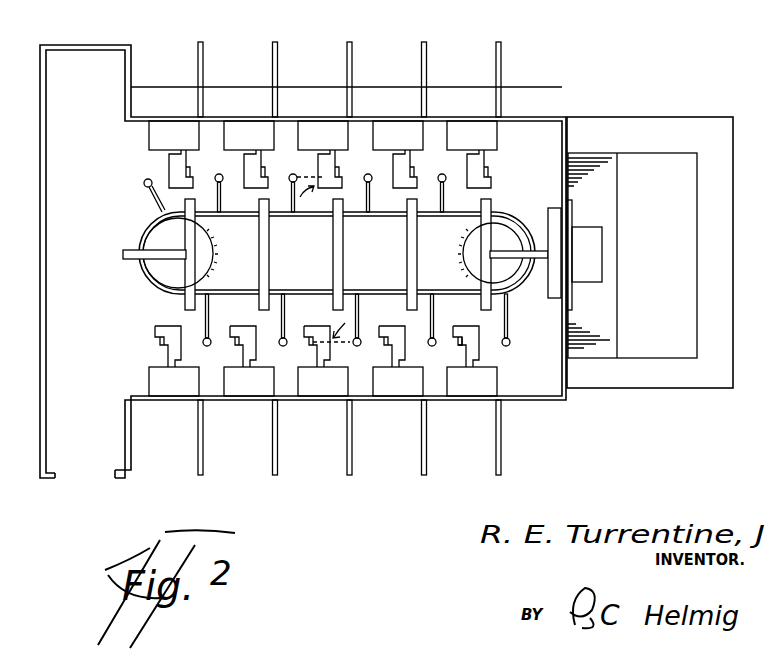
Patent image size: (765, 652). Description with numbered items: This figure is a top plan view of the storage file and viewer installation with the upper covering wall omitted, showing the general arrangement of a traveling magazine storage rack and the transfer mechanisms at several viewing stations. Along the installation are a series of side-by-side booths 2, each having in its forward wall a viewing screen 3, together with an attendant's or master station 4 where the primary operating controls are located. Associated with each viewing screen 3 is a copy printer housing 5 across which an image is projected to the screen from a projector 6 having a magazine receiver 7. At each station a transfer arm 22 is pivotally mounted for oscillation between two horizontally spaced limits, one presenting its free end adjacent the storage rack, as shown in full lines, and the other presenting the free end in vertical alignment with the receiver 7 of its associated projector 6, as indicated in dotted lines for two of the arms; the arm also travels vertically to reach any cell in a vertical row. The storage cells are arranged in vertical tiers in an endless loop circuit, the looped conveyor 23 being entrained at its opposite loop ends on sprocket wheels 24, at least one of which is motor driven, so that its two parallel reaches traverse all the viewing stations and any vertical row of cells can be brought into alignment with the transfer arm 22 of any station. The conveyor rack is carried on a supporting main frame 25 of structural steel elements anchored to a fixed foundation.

The booths 2 is at (312, 55).
The viewing screen 3 is at (460, 229).
The attendant's or master station 4 is at (662, 199).
The copy printer housing 5 is at (247, 137).
The projector 6 is at (165, 355).
The magazine receiver 7 is at (457, 340).
The transfer arm 22 is at (358, 315).
The looped conveyor 23 is at (306, 288).
The sprocket wheels 24 is at (210, 238).
The supporting main frame 25 is at (130, 253).